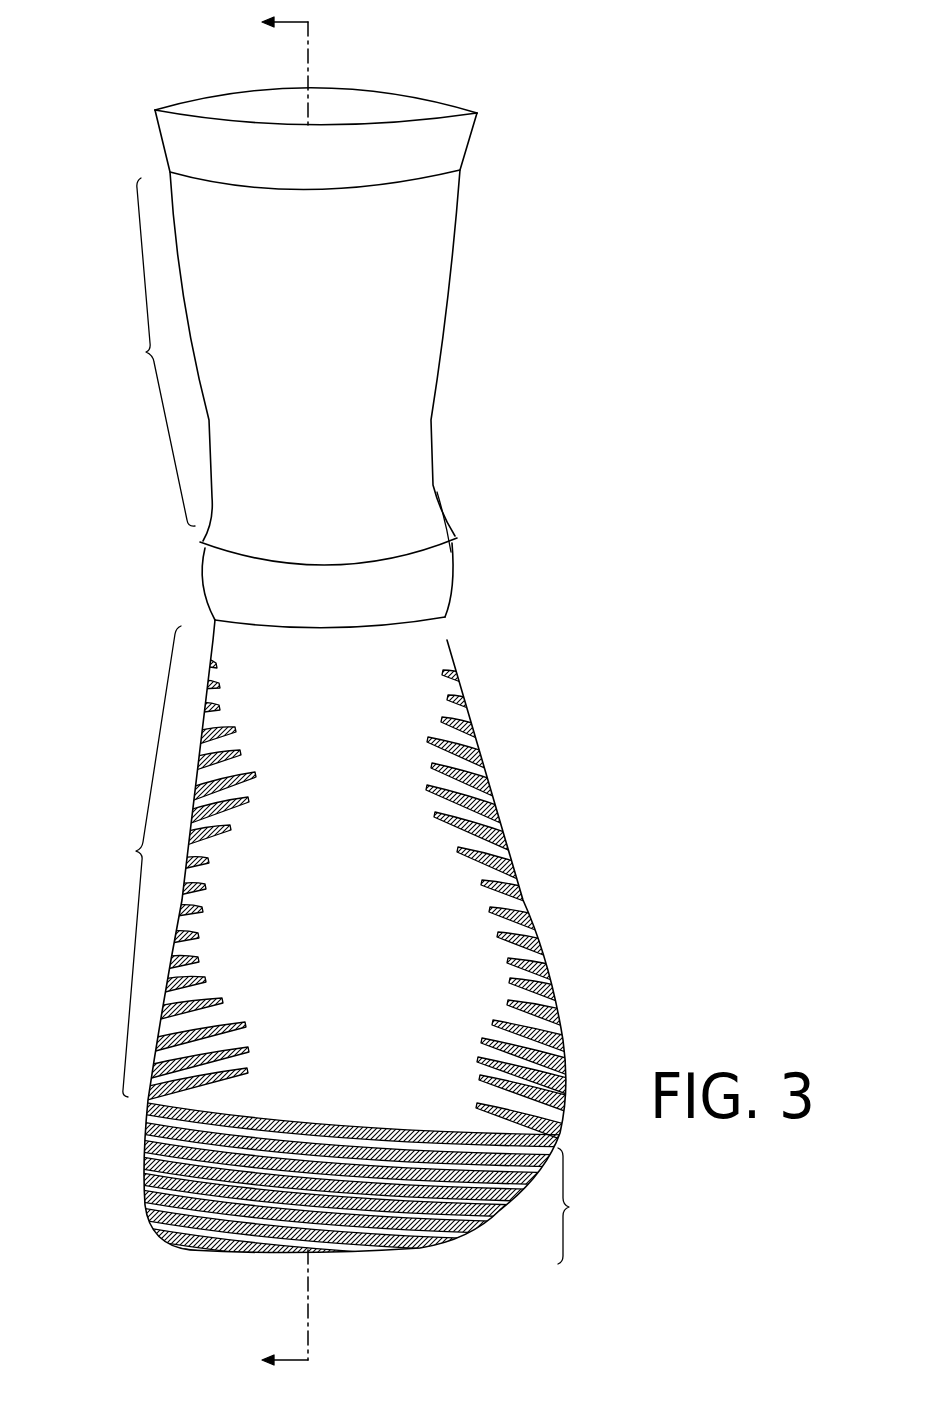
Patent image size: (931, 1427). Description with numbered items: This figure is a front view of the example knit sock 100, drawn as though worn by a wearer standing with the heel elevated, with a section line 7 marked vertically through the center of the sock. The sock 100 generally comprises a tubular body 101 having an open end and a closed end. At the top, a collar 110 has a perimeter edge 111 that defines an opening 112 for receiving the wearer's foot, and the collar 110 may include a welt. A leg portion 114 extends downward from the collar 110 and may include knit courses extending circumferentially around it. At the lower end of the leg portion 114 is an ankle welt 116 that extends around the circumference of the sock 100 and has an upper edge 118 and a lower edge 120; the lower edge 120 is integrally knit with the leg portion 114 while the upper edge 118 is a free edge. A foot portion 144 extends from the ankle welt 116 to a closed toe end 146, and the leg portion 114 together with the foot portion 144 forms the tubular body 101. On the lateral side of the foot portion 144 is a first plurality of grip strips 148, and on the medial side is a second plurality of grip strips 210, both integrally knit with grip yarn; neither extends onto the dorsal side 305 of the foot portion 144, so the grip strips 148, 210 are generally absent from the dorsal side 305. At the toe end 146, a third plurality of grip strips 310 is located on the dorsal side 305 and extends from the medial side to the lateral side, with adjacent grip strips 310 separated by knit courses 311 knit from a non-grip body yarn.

The section line 7- 7 is at (273, 693).
The knit sock 100 is at (648, 220).
The tubular body 101 is at (602, 357).
The collar 110 is at (180, 147).
The perimeter edge 111 is at (210, 104).
The opening 112 is at (368, 104).
The leg portion 114 is at (151, 352).
The ankle welt 116 is at (422, 584).
The upper edge 118 is at (338, 568).
The lower edge 120 is at (335, 632).
The foot portion 144 is at (136, 861).
The toe end 146 is at (590, 1206).
The first plurality of grip strips 148 is at (510, 868).
The second plurality of grip strips 210 is at (200, 955).
The dorsal side 305 is at (371, 960).
The third plurality of grip strips 310 is at (145, 1197).
The knit courses 311 is at (463, 1207).